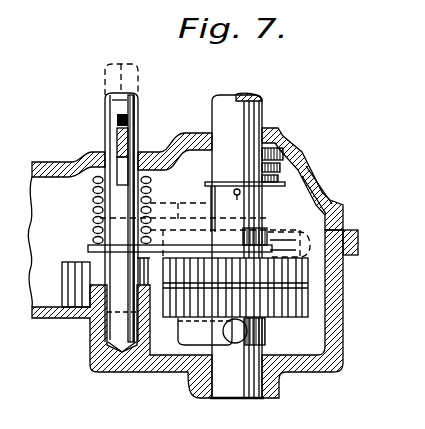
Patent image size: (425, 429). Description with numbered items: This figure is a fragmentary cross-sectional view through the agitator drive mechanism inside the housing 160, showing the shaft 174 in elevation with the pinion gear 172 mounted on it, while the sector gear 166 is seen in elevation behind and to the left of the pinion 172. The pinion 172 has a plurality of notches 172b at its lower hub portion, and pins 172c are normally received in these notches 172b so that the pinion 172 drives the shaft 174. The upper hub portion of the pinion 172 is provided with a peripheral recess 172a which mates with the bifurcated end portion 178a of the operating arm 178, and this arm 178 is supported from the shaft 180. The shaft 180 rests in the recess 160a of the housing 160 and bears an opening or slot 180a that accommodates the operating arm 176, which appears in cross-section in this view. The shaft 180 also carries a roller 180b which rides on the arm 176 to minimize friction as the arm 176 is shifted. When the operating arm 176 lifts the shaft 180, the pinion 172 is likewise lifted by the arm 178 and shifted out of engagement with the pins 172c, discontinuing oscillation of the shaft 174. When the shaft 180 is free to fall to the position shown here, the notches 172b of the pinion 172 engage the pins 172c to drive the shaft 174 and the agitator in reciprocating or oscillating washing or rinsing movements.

The housing 160 is at (168, 371).
The recess 160a is at (110, 347).
The sector gear 166 is at (88, 282).
The pinion gear 172 is at (302, 292).
The peripheral recess 172a is at (276, 248).
The notches 172b is at (213, 333).
The pins 172c is at (233, 341).
The shaft 174 is at (243, 129).
The operating arm 176 is at (118, 143).
The operating arm 178 is at (90, 250).
The bifurcated end portion 178a is at (283, 223).
The shaft 180 is at (136, 112).
The slot 180a is at (122, 170).
The roller 180b is at (124, 108).